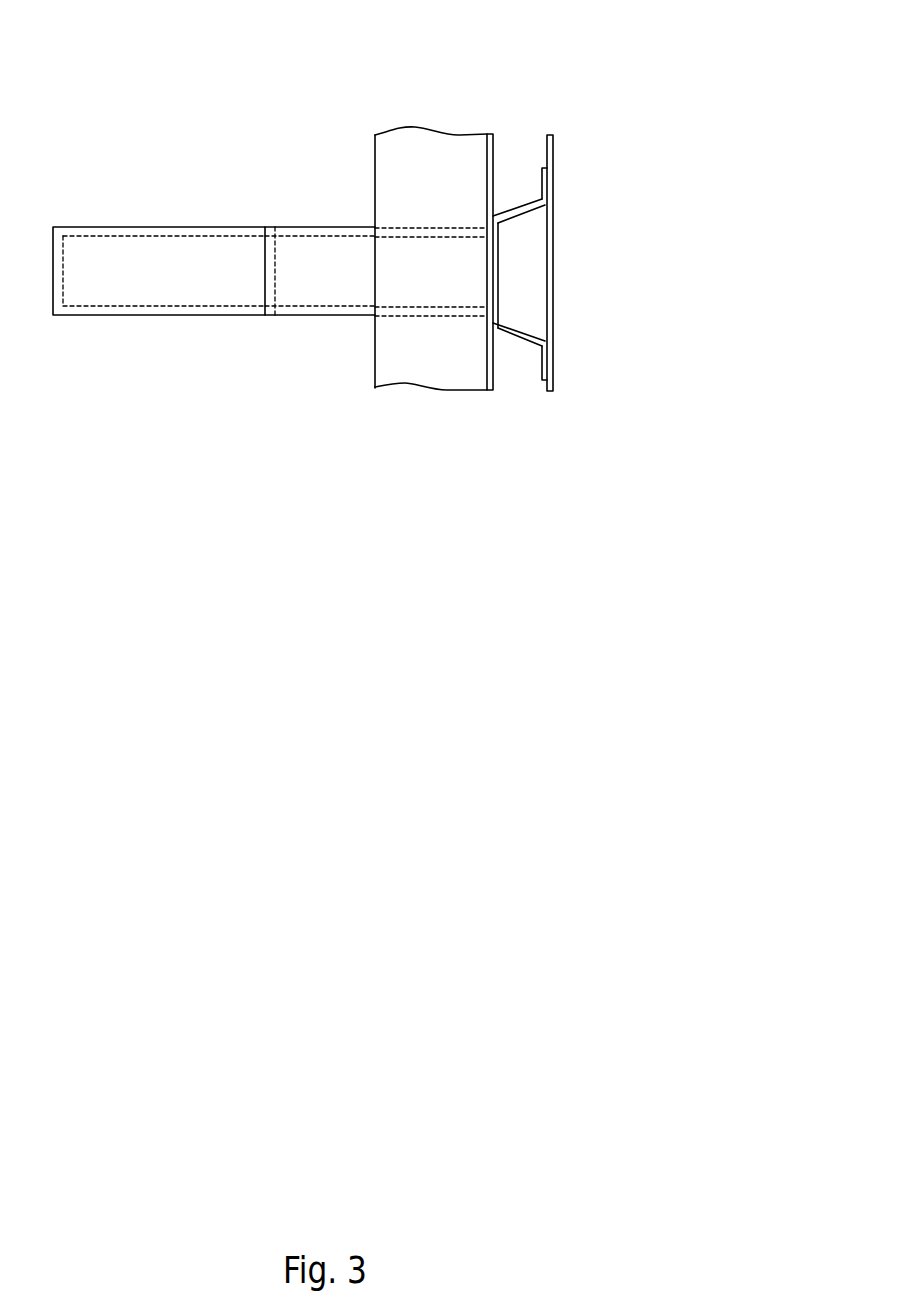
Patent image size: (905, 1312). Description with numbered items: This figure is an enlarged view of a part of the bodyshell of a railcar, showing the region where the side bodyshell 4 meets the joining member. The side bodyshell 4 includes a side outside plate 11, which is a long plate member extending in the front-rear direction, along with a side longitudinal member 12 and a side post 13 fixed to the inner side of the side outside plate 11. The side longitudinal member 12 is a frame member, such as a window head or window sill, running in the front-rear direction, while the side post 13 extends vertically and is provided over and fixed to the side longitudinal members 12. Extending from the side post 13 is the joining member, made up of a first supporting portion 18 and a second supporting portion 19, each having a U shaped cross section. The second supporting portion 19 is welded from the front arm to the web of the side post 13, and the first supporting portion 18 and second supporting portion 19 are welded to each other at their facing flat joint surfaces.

The side bodyshell 4 is at (504, 199).
The side outside plate 11 is at (553, 227).
The side longitudinal member 12 is at (522, 208).
The side post 13 is at (430, 147).
The first supporting portion 18 is at (173, 252).
The second supporting portion 19 is at (322, 253).